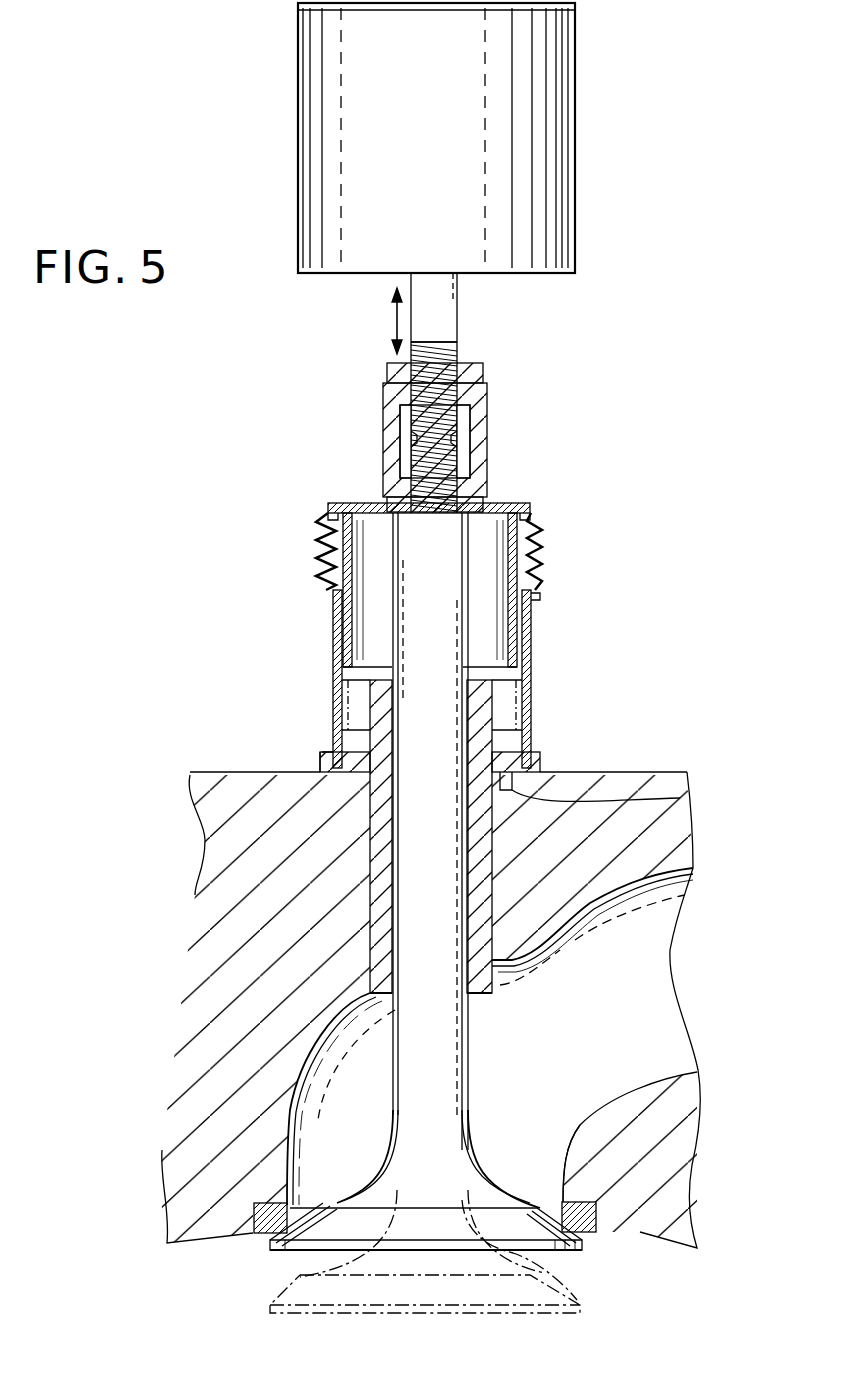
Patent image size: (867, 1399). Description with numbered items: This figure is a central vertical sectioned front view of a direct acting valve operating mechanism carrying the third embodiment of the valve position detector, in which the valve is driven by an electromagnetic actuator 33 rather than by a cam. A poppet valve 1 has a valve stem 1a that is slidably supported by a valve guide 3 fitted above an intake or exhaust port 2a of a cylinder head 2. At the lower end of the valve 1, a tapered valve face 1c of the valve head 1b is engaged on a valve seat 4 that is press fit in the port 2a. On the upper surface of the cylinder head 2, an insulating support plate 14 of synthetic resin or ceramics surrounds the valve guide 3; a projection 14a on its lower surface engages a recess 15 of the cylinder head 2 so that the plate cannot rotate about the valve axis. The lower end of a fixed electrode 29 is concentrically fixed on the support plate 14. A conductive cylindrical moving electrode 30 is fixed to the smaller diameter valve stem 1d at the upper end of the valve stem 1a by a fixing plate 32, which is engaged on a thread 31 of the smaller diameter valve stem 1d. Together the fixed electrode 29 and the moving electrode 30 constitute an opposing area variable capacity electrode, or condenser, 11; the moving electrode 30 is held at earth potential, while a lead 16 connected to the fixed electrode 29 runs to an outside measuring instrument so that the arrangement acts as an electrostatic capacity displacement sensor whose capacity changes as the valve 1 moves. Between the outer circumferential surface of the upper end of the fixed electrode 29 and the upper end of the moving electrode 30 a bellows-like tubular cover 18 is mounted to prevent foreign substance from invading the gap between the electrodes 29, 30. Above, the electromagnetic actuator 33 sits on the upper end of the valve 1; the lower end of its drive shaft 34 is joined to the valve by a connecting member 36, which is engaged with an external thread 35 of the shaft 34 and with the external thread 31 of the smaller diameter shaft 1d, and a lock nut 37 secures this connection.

The poppet valve 1 is at (389, 831).
The valve stem 1a is at (462, 1078).
The valve head 1b is at (262, 1318).
The tapered valve face 1c is at (264, 1238).
The smaller diameter valve stem 1d is at (457, 464).
The cylinder head 2 is at (660, 1222).
The intake or exhaust port 2a is at (605, 1112).
The valve guide 3 is at (487, 925).
The valve seat 4 is at (235, 1205).
The opposing area variable capacity electrode 11 is at (316, 629).
The insulating support plate 14 is at (491, 836).
The projection 14a is at (520, 783).
The recess 15 is at (660, 798).
The lead 16 is at (320, 765).
The bellows-like tubular cover 18 is at (325, 545).
The fixed electrode 29 is at (333, 690).
The conductive cylindrical moving electrode 30 is at (345, 565).
The thread 31 is at (455, 452).
The fixing plate 32 is at (395, 492).
The electromagnetic actuator 33 is at (578, 122).
The drive shaft 34 is at (457, 305).
The external thread 35 is at (450, 348).
The connecting member 36 is at (487, 398).
The lock nut 37 is at (387, 375).